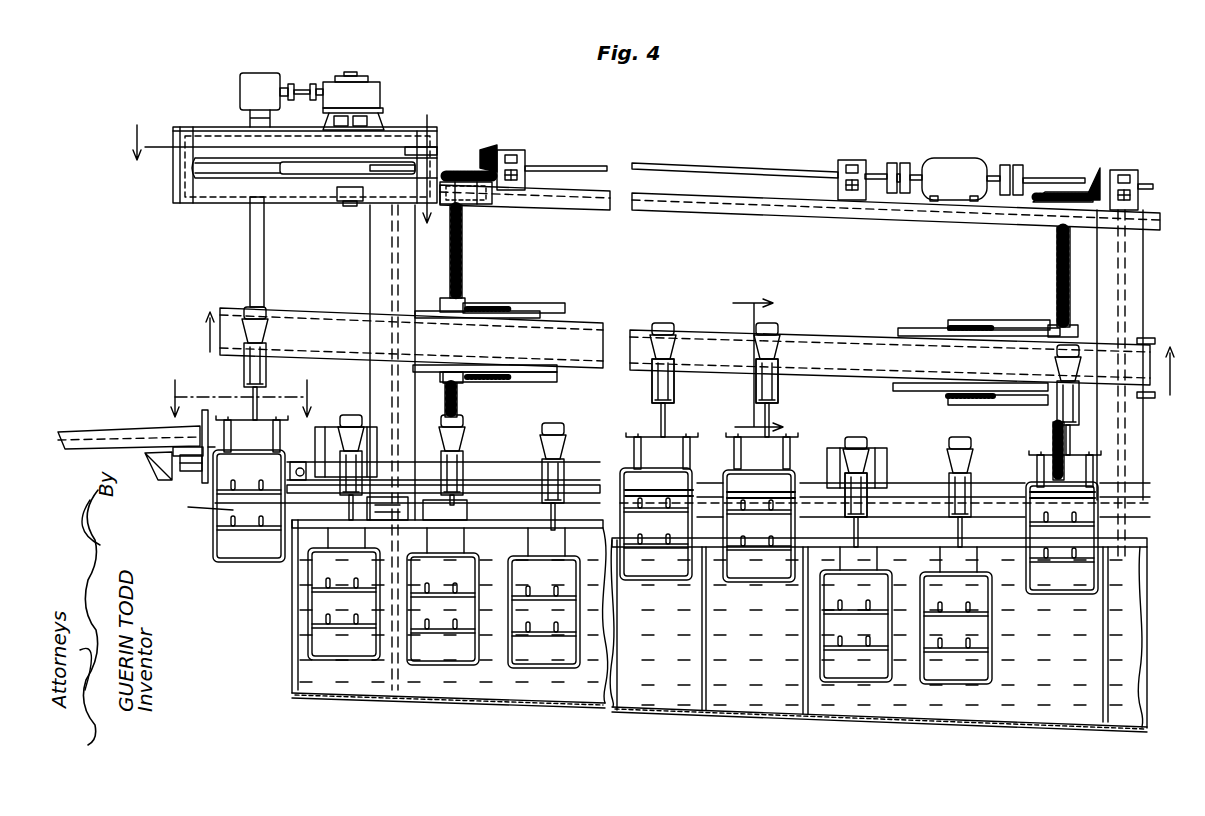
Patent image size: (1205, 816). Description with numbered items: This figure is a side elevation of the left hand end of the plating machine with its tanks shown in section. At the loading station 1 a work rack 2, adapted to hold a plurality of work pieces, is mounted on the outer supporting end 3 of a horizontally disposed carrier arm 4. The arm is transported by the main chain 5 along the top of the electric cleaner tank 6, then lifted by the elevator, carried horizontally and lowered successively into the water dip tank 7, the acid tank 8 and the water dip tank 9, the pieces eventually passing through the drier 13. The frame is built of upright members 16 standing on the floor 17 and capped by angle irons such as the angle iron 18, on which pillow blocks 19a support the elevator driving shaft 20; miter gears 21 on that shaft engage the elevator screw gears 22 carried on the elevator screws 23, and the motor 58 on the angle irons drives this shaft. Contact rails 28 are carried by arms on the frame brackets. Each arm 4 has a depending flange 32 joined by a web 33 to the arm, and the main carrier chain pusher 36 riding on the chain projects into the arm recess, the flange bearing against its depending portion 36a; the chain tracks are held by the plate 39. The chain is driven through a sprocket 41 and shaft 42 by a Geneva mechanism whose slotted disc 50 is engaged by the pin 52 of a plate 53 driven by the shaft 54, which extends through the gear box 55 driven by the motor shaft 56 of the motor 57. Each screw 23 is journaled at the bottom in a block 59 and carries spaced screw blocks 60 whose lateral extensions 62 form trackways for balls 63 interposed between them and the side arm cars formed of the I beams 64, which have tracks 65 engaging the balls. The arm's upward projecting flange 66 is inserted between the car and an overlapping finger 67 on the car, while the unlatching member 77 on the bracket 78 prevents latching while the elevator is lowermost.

The loading station 1 is at (187, 507).
The work rack 2 is at (233, 565).
The outer supporting end 3 is at (265, 421).
The carrier arm 4 is at (95, 432).
The main chain 5 is at (192, 476).
The electric cleaner tank 6 is at (536, 694).
The water dip tank 7 is at (752, 698).
The acid tank 8 is at (953, 707).
The water dip tank 9 is at (1121, 721).
The drier 13 is at (742, 362).
The upright members 16 is at (385, 282).
The floor 17 is at (242, 398).
The angle iron 18 is at (783, 210).
The pillow blocks 19a is at (527, 164).
The elevator driving shaft 20 is at (735, 150).
The miter gears 21 is at (497, 152).
The elevator screw gears 22 is at (478, 200).
The elevator screws 23 is at (462, 250).
The contact rails 28 is at (507, 480).
The depending flange 32 is at (678, 388).
The web 33 is at (165, 457).
The main carrier chain pusher 36 is at (662, 462).
The depending portion 36a is at (664, 488).
The plate 39 is at (587, 480).
The sprocket 41 is at (298, 460).
The shaft 42 is at (264, 266).
The slotted disc 50 is at (235, 164).
The pin 52 is at (297, 176).
The plate 53 is at (418, 152).
The shaft 54 is at (352, 207).
The gear box 55 is at (372, 86).
The motor shaft 56 is at (300, 85).
The motor 57 is at (262, 72).
The motor 58 is at (960, 160).
The block 59 is at (467, 507).
The screw blocks 60 is at (447, 298).
The lateral extensions 62 is at (540, 303).
The balls 63 is at (497, 305).
The I beams 64 is at (585, 335).
The tracks 65 is at (427, 318).
The upward projecting flange 66 is at (462, 423).
The overlapping finger 67 is at (663, 323).
The unlatching member 77 is at (848, 448).
The bracket 78 is at (884, 468).